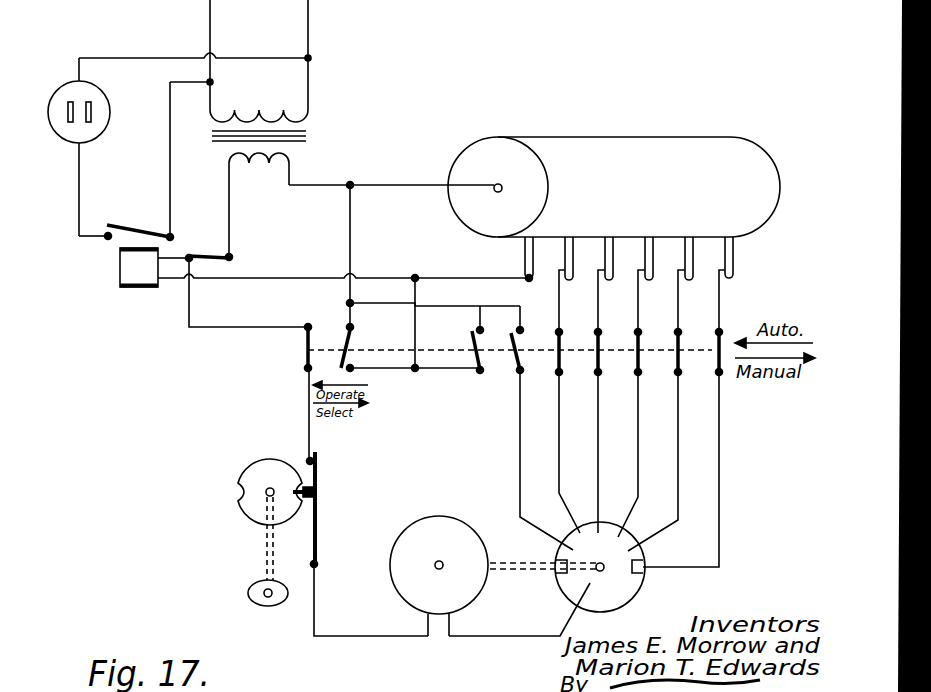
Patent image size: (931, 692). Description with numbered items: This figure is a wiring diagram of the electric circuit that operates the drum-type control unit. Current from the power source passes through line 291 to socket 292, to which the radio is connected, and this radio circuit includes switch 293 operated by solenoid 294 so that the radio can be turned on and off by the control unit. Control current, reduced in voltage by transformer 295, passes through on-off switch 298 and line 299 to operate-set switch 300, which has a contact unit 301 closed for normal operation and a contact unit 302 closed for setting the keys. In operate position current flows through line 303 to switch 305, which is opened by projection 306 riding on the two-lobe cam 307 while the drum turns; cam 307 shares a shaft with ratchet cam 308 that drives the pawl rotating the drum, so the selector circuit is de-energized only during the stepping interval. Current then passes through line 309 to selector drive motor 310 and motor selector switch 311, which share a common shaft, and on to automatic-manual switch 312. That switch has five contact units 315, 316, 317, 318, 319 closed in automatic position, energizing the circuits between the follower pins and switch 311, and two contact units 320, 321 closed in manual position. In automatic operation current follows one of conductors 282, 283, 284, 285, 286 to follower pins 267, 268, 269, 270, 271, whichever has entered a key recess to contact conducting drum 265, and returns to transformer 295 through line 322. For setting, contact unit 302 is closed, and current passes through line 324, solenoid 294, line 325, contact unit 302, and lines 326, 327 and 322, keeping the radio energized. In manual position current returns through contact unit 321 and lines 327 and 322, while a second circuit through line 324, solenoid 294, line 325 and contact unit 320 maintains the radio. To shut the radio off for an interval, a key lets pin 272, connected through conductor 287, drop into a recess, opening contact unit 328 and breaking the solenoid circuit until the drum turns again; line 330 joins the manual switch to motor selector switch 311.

The drum 265 is at (720, 136).
The follower pin 267 is at (747, 257).
The follower pin 268 is at (704, 258).
The follower pin 269 is at (664, 258).
The follower pin 270 is at (624, 258).
The follower pin 271 is at (584, 258).
The follower pin 272 is at (544, 257).
The electric conductor 282 is at (722, 294).
The electric conductor 283 is at (681, 294).
The electric conductor 284 is at (641, 294).
The electric conductor 285 is at (601, 294).
The electric conductor 286 is at (562, 294).
The electric conductor 287 is at (482, 276).
The line 291 is at (142, 58).
The socket 292 is at (100, 137).
The switch 293 is at (143, 221).
The solenoid 294 is at (118, 272).
The transformer 295 is at (332, 126).
The on-off switch 298 is at (248, 252).
The line 299 is at (234, 328).
The operate-set switch 300 is at (331, 326).
The contact unit 301 is at (301, 360).
The contact unit 302 is at (354, 342).
The line 303 is at (308, 431).
The switch 305 is at (320, 472).
The projection 306 is at (302, 503).
The two-lobe cam 307 is at (242, 478).
The ratchet cam 308 is at (250, 583).
The line 309 is at (356, 638).
The selector drive motor 310 is at (414, 518).
The motor selector switch 311 is at (628, 579).
The automatic-manual switch 312 is at (496, 412).
The contact unit 315 is at (722, 372).
The contact unit 316 is at (681, 372).
The contact unit 317 is at (641, 372).
The contact unit 318 is at (601, 372).
The contact unit 319 is at (562, 372).
The contact unit 320 is at (472, 339).
The contact unit 321 is at (514, 372).
The line 322 is at (314, 183).
The line 324 is at (188, 254).
The line 325 is at (218, 280).
The line 326 is at (354, 310).
The line 327 is at (352, 234).
The contact unit 328 is at (533, 291).
The wire 330 is at (518, 474).